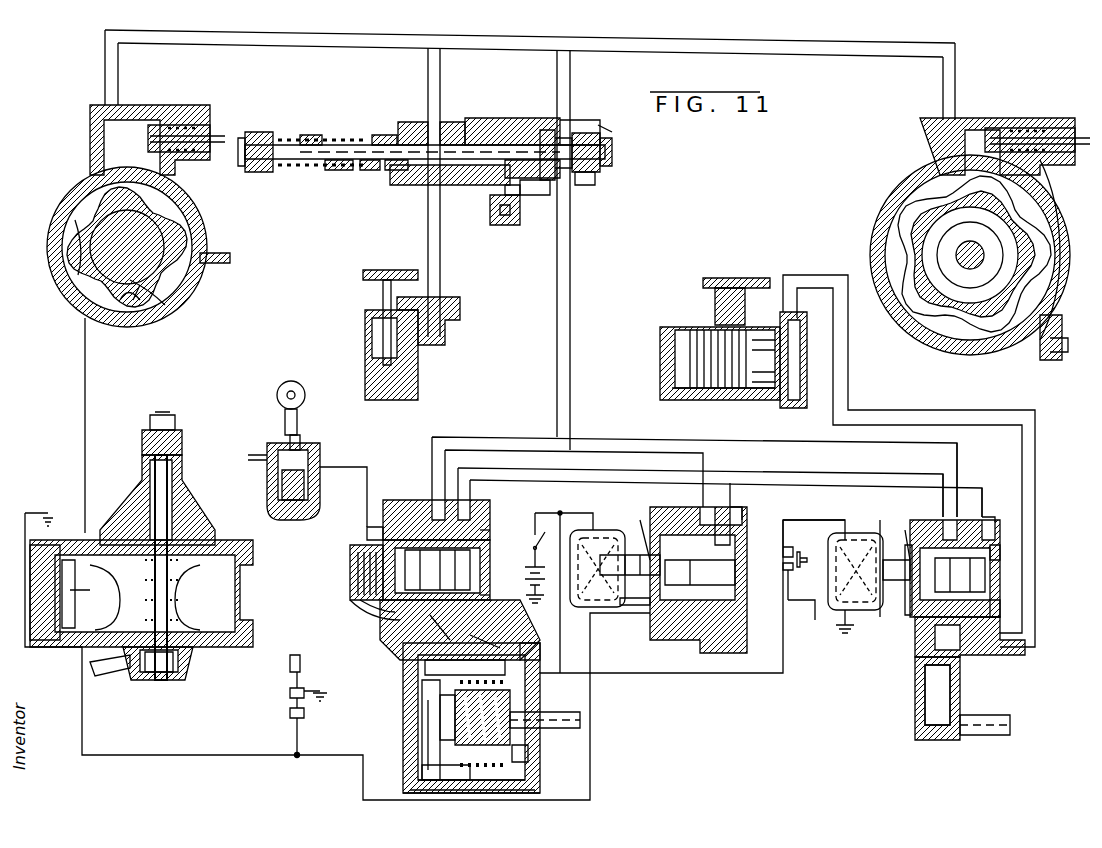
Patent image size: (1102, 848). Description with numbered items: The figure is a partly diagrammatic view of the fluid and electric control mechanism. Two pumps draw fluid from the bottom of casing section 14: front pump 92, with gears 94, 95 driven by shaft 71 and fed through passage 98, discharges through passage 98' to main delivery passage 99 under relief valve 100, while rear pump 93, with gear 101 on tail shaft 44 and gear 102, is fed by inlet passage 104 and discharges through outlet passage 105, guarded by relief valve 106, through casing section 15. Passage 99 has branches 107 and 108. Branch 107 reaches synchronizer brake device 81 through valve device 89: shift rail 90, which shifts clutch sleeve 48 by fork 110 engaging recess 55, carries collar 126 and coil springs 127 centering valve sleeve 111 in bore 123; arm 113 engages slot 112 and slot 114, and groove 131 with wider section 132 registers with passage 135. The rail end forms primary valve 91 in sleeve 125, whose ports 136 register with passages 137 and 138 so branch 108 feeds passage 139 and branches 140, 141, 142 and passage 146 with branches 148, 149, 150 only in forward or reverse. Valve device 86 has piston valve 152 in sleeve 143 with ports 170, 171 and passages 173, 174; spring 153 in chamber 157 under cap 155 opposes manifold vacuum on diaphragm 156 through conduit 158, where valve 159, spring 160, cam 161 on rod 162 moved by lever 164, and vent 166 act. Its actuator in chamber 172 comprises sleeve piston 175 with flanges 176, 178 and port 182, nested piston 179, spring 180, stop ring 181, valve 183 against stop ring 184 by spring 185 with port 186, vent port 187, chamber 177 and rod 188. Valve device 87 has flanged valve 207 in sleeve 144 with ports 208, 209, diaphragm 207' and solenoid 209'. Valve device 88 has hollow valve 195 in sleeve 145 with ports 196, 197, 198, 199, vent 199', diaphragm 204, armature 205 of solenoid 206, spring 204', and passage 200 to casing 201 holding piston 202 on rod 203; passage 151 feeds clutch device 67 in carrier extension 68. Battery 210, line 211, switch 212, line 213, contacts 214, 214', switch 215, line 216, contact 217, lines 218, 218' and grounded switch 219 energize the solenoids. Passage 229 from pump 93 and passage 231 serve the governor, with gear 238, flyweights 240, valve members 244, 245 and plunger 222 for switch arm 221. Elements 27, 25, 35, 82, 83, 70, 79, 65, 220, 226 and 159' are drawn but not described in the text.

The main delivery passage 99 is at (500, 44).
The outlet passage 105 is at (105, 88).
The passage 98' is at (965, 81).
The outlet branch 107 is at (428, 95).
The passage 135 is at (440, 272).
The outlet branch 108 is at (557, 92).
The passage 139 is at (618, 439).
The branch passage 140 is at (445, 450).
The branch passage 148 is at (470, 492).
The branch passage 141 is at (703, 470).
The passage 146 is at (790, 481).
The branch passage 149 is at (730, 495).
The valve sleeve 144 is at (745, 512).
The branch passage 142 is at (957, 464).
The branch passage 150 is at (982, 495).
The valve sleeve 145 is at (998, 520).
The passage 151 is at (1012, 420).
The passage 229 is at (85, 437).
The conduit 158 is at (268, 456).
The rear pump 93 is at (55, 228).
The gear 102 is at (90, 190).
The gear 101 is at (78, 212).
The tail shaft 44 is at (160, 290).
The inlet passage 104 is at (216, 265).
The pressure relief valve 106 is at (196, 102).
The front pump 92 is at (900, 190).
The pump rotor 27 is at (930, 185).
The shaft 71 is at (905, 215).
The gear 95 is at (900, 230).
The shaft 25 is at (970, 245).
The gear 94 is at (1050, 224).
The passage 98 is at (1045, 340).
The pressure relief valve 100 is at (1030, 127).
The valve device 89 is at (420, 122).
The collar 126 is at (266, 142).
The shift rail 90 is at (315, 142).
The coil springs 127 is at (300, 172).
The slot 112 is at (360, 172).
The arm 113 is at (390, 172).
The slot 114 is at (395, 172).
The valve and actuator sleeve 111 is at (406, 133).
The peripheral groove 131 is at (452, 124).
The bore 123 is at (512, 124).
The casing section 15 is at (512, 118).
The wider section 132 is at (420, 186).
The fork 110 is at (540, 180).
The passage 138 is at (540, 198).
The ports 136 is at (570, 145).
The primary valve device 91 is at (602, 166).
The passage 137 is at (608, 148).
The casing section 14 is at (598, 135).
The sleeve 125 is at (585, 186).
The recess 55 is at (495, 225).
The clutch sleeve 48 is at (512, 226).
The plate 35 is at (390, 275).
The rod 82 is at (383, 325).
The synchronizer brake device 81 is at (370, 345).
The body part 83 is at (425, 338).
The plate 70 is at (740, 280).
The clutch device 67 is at (672, 362).
The filter element 79 is at (732, 359).
The filter base 65 is at (708, 398).
The carrier extension 68 is at (785, 402).
The gear 238 is at (182, 450).
The passage 231 is at (135, 505).
The switch arm 221 is at (58, 540).
The actuator plunger 222 is at (120, 600).
The flyweights 240 is at (195, 600).
The valve member 244 is at (150, 612).
The valve member 245 is at (173, 612).
The lower body 220 is at (195, 660).
The seat 226 is at (185, 672).
The outlet tube 159' is at (110, 678).
The cam 161 is at (305, 398).
The throttle valve operating rod 162 is at (287, 392).
The spring 160 is at (270, 512).
The vent 166 is at (275, 492).
The valve 159 is at (318, 443).
The port 170 is at (428, 500).
The valve sleeve 143 is at (395, 500).
The spring 153 is at (352, 555).
The cap 155 is at (358, 570).
The chamber 157 is at (352, 600).
The diaphragm 156 is at (368, 606).
The piston valve 152 is at (472, 568).
The port 171 is at (486, 532).
The passage 173 is at (482, 598).
The valve device 86 is at (380, 620).
The internal flange 178 is at (470, 615).
The coil spring 180 is at (500, 640).
The chamber 177 is at (528, 647).
The passage 174 is at (403, 650).
The port 182 is at (425, 668).
The flange 176 is at (425, 700).
The valve 183 is at (440, 712).
The radial port 186 is at (428, 735).
The stop ring 184 is at (425, 765).
The actuator chamber 172 is at (418, 778).
The spring 185 is at (410, 788).
The piston member 179 is at (512, 700).
The stop ring 181 is at (520, 682).
The rod 188 is at (560, 729).
The vent port 187 is at (530, 752).
The sleeve piston 175 is at (545, 775).
The line 211 is at (564, 514).
The switch 212 is at (533, 545).
The battery 210 is at (530, 587).
The line 213 is at (435, 656).
The line 216 is at (828, 520).
The lever 164 is at (301, 662).
The grounded switch 219 is at (290, 692).
The contact 217 is at (290, 713).
The line 218' is at (274, 736).
The line 218 is at (277, 767).
The valve device 87 is at (642, 640).
The rod 203 is at (590, 607).
The port 208 is at (628, 553).
The diaphragm 207' is at (632, 530).
The solenoid 209' is at (627, 617).
The port 209 is at (742, 540).
The flanged valve 207 is at (718, 572).
The contact 214' is at (799, 538).
The switch 215 is at (802, 566).
The contact 214 is at (797, 581).
The spring 204' is at (804, 610).
The solenoid 206 is at (836, 626).
The port 196 is at (930, 522).
The diaphragm 204 is at (864, 564).
The vent 199' is at (891, 529).
The sleeve port 199 is at (891, 598).
The armature 205 is at (904, 620).
The flanged hollow valve 195 is at (960, 575).
The port 197 is at (1004, 549).
The port 198 is at (1006, 607).
The valve device 88 is at (900, 650).
The passage 200 is at (915, 665).
The actuator piston 202 is at (960, 702).
The casing 201 is at (925, 715).